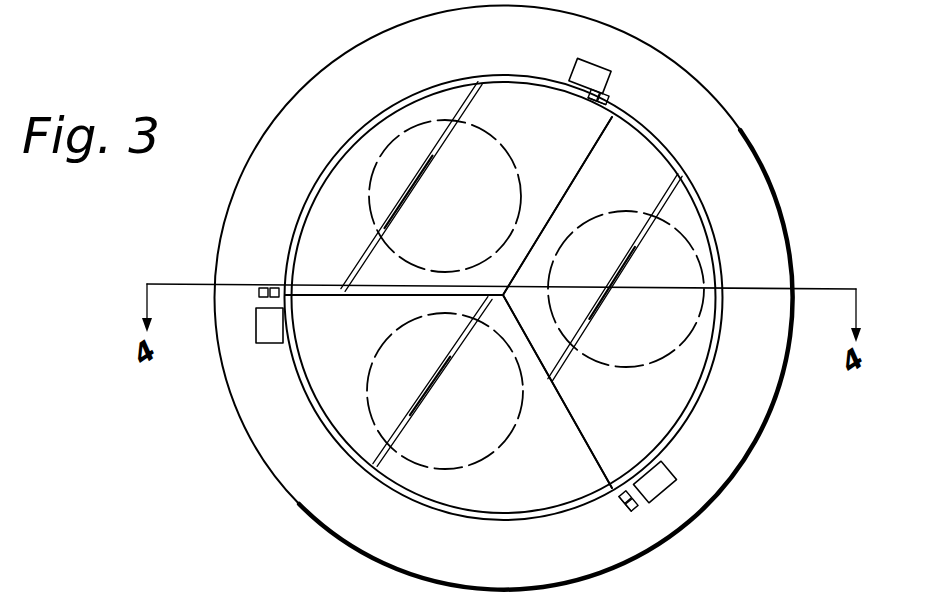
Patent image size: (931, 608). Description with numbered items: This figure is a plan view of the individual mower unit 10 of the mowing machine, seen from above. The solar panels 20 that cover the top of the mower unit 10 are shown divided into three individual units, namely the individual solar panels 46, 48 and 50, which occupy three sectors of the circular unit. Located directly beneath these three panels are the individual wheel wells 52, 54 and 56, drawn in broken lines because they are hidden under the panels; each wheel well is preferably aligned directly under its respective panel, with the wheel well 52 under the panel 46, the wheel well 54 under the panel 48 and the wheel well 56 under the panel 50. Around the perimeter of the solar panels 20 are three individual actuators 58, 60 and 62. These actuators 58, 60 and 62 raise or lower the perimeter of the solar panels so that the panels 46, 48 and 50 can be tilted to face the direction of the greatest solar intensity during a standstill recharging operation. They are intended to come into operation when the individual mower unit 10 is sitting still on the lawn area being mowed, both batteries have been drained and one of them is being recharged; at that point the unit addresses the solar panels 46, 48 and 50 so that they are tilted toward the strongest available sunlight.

The individual mower unit 10 is at (748, 128).
The solar panels 20 is at (638, 186).
The individual solar panel 46 is at (558, 144).
The individual solar panel 48 is at (556, 481).
The individual solar panel 50 is at (640, 431).
The individual wheel well 52 is at (466, 184).
The individual wheel well 54 is at (473, 436).
The individual wheel well 56 is at (643, 331).
The actuator 58 is at (592, 68).
The actuator 60 is at (670, 486).
The actuator 62 is at (266, 346).